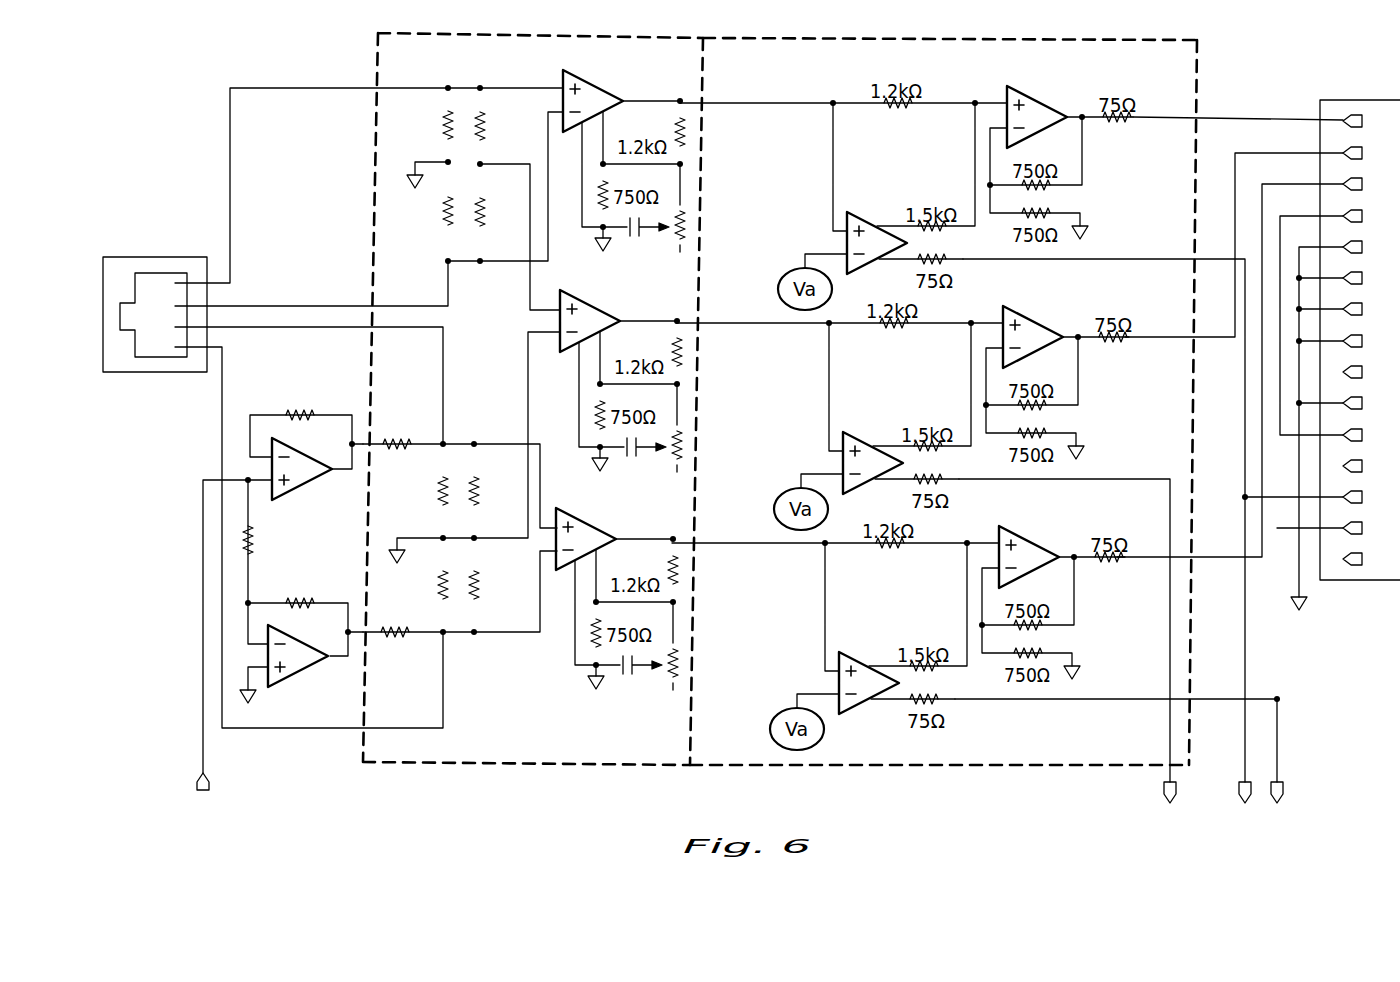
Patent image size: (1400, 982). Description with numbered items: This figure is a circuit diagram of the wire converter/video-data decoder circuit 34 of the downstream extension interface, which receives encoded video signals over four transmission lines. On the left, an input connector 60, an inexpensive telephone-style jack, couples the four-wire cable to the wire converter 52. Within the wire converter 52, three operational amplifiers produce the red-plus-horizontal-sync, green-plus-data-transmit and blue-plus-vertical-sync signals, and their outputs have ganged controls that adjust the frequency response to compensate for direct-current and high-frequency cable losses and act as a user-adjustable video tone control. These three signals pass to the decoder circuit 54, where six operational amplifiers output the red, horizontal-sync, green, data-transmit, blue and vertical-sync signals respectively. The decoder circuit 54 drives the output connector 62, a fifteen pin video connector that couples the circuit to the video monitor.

The 4-to-3 wire converter/video-data decoder circuit 34 is at (175, 92).
The 4-to-3 wire converter 52 is at (541, 720).
The decoder circuit 54 is at (1078, 740).
The input connector 60 is at (154, 257).
The output connector 62 is at (1350, 582).